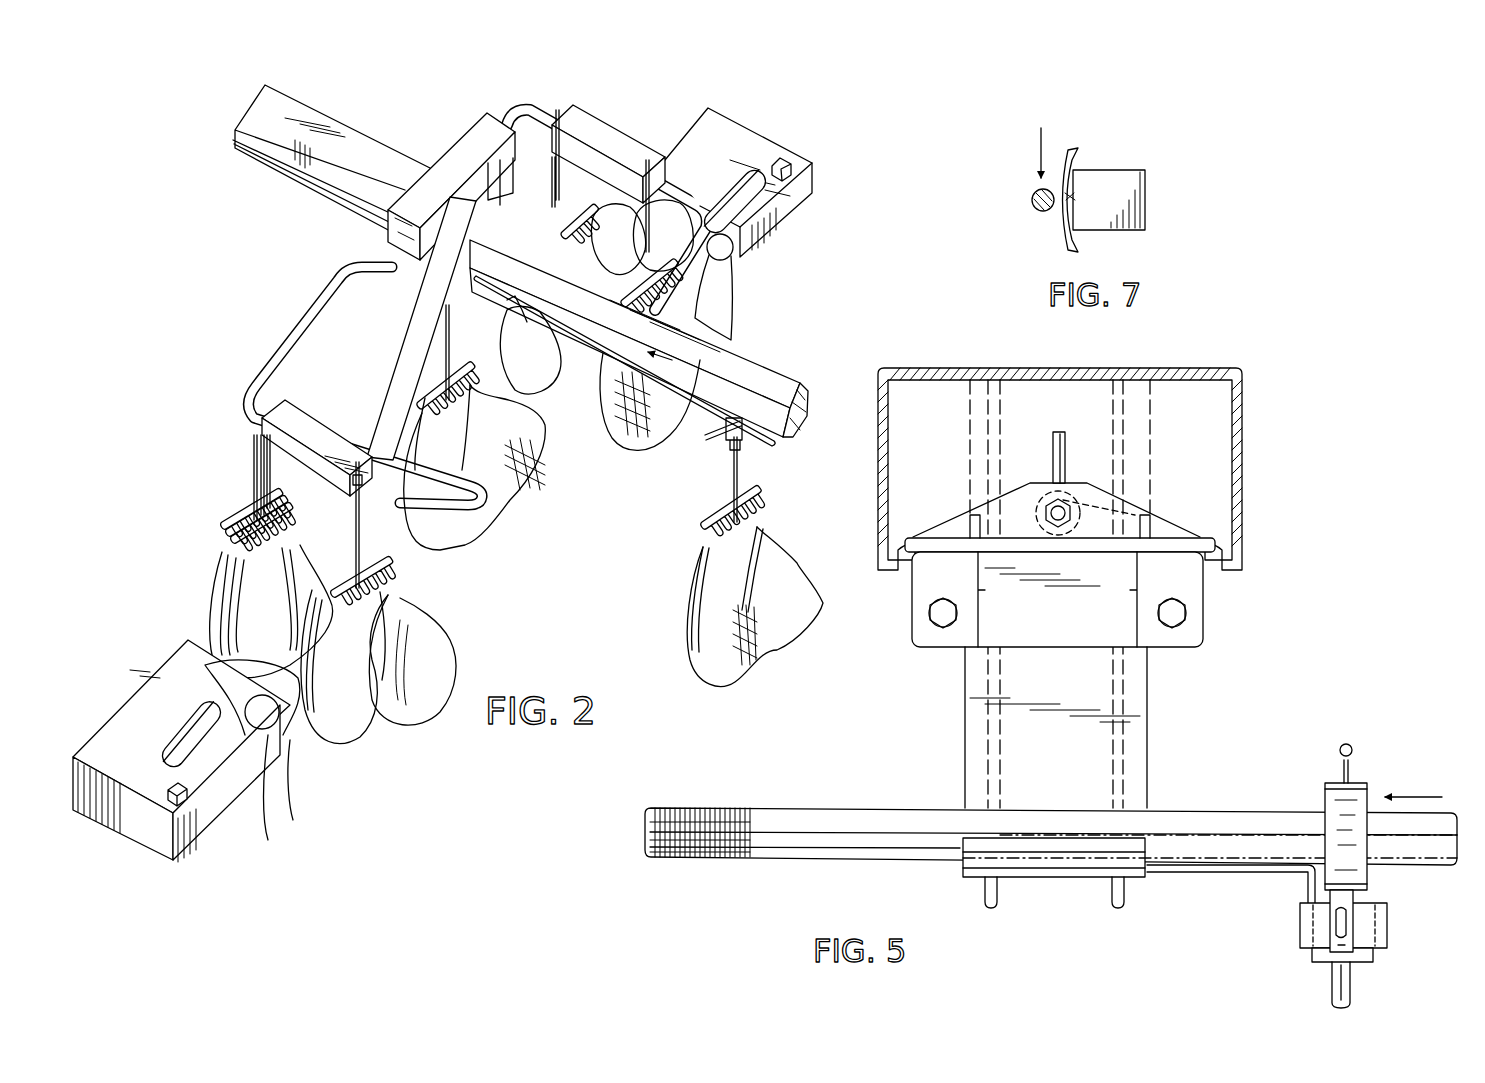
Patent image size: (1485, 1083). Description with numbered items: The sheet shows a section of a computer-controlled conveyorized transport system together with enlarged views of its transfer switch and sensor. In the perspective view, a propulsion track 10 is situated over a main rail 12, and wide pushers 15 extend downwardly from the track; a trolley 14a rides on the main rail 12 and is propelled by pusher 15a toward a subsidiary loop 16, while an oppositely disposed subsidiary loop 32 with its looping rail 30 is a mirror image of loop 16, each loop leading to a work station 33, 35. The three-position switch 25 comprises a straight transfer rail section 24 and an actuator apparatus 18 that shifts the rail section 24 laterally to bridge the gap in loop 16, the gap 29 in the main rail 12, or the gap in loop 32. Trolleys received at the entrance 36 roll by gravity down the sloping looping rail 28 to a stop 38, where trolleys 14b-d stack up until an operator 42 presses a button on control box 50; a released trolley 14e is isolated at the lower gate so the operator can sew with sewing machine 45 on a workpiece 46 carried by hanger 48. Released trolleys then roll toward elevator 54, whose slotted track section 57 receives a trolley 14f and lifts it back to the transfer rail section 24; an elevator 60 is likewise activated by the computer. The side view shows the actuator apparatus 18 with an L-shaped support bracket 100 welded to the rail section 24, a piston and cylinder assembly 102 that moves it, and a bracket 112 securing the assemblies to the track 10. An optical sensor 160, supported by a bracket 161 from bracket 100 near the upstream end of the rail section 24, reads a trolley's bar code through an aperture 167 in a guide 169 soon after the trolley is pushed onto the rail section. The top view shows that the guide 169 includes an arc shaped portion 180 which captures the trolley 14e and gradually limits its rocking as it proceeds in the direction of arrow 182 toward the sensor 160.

In FIG. 2, the propulsion track 10 is at (755, 375).
In FIG. 2, the main rail 12 is at (280, 172).
In FIG. 2, the trolley 14a is at (745, 455).
In FIG. 2, the trolleys 14b-d is at (235, 512).
In FIG. 2, the trolley 14e is at (365, 603).
In FIG. 5, the trolley 14e is at (1325, 800).
In FIG. 7, the trolley 14e is at (1033, 204).
In FIG. 2, the trolley 14f is at (449, 345).
In FIG. 2, the pusher 15 is at (527, 323).
In FIG. 2, the pusher 15a is at (650, 412).
In FIG. 2, the subsidiary loop 16 is at (248, 365).
In FIG. 2, the actuator apparatus 18 is at (459, 155).
In FIG. 5, the actuator apparatus 18 is at (1212, 650).
In FIG. 2, the transfer rail section 24 is at (415, 296).
In FIG. 5, the transfer rail section 24 is at (889, 845).
In FIG. 2, the three-position switch 25 is at (421, 150).
In FIG. 2, the looping rail 28 is at (328, 283).
In FIG. 2, the gap 29 is at (466, 292).
In FIG. 2, the looping rail 30 is at (527, 108).
In FIG. 2, the subsidiary loop 32 is at (582, 125).
In FIG. 2, the work station 33 is at (181, 751).
In FIG. 2, the work station 35 is at (697, 132).
In FIG. 2, the entrance 36 is at (393, 272).
In FIG. 2, the stop 38 is at (310, 425).
In FIG. 2, the operator 42 is at (292, 790).
In FIG. 2, the sewing machine 45 is at (165, 722).
In FIG. 2, the workpiece 46 is at (368, 718).
In FIG. 2, the hanger 48 is at (392, 565).
In FIG. 2, the control box 50 is at (170, 790).
In FIG. 2, the elevator 54 is at (398, 385).
In FIG. 2, the slotted track section 57 is at (425, 335).
In FIG. 2, the elevator 60 is at (537, 207).
In FIG. 2, the L-shaped support bracket 100 is at (495, 205).
In FIG. 5, the L-shaped support bracket 100 is at (965, 745).
In FIG. 5, the first piston and cylinder assembly 102 is at (1138, 510).
In FIG. 5, the bracket 112 is at (940, 527).
In FIG. 5, the optical sensor 160 is at (1367, 943).
In FIG. 7, the optical sensor 160 is at (1118, 170).
In FIG. 5, the bracket 161 is at (1235, 872).
In FIG. 7, the aperture 167 is at (1069, 197).
In FIG. 5, the guide 169 is at (1388, 910).
In FIG. 7, the guide 169 is at (1058, 228).
In FIG. 7, the arc shaped portion 180 is at (1069, 150).
In FIG. 7, the arrow 182 is at (1041, 148).